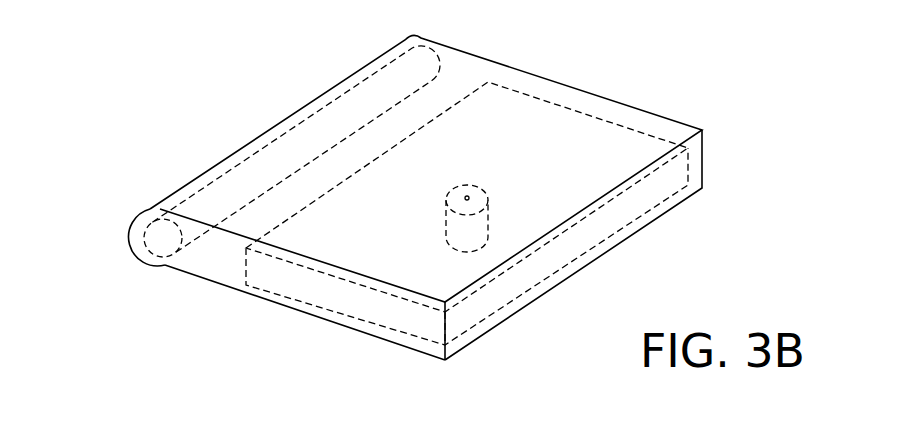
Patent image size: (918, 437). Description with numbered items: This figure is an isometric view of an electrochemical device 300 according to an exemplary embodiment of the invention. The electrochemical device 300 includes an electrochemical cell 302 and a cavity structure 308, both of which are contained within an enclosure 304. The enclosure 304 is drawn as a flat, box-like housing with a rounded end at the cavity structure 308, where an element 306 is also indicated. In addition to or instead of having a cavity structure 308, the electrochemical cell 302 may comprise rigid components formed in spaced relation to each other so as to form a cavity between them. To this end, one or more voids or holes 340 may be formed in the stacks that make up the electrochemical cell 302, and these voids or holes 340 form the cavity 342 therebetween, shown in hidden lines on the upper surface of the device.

The electrochemical device 300 is at (638, 94).
The electrochemical cell 302 is at (490, 320).
The enclosure 304 is at (203, 281).
The hinge pin 306 is at (162, 238).
The cavity structure 308 is at (140, 211).
The voids or holes 340 is at (488, 198).
The cavity 342 is at (467, 196).